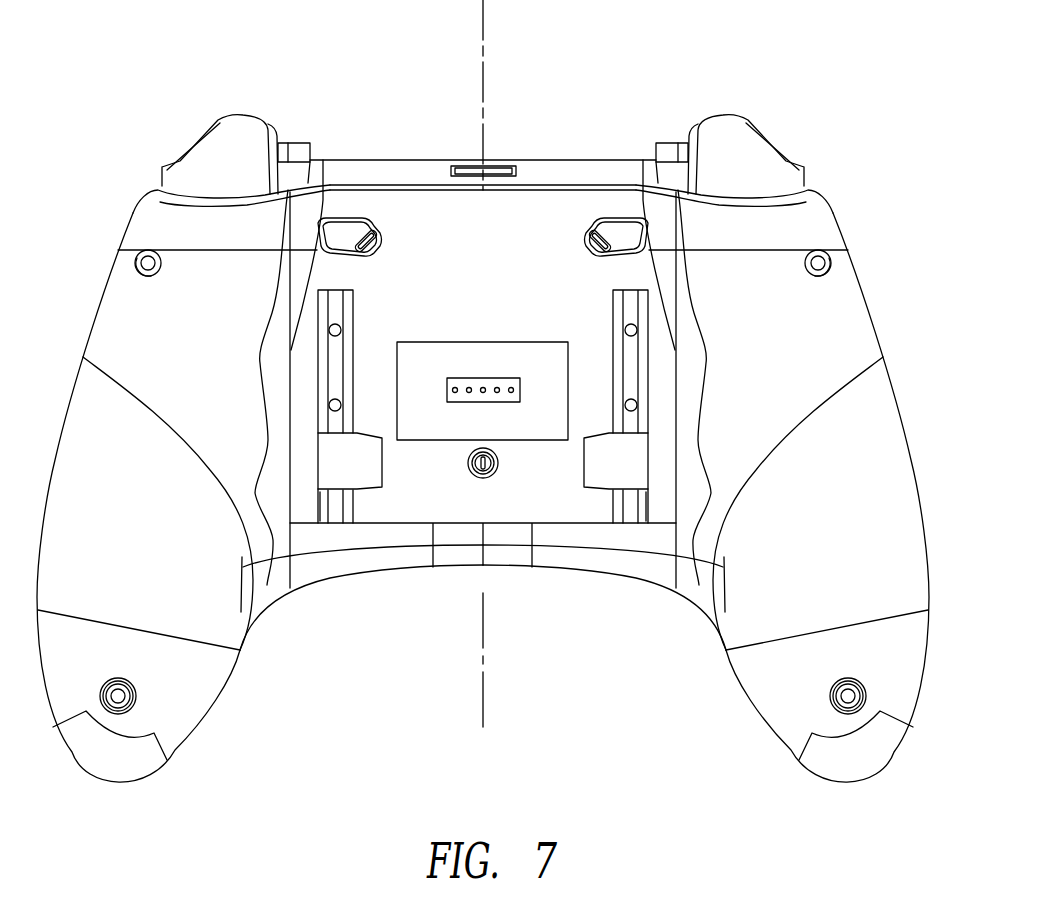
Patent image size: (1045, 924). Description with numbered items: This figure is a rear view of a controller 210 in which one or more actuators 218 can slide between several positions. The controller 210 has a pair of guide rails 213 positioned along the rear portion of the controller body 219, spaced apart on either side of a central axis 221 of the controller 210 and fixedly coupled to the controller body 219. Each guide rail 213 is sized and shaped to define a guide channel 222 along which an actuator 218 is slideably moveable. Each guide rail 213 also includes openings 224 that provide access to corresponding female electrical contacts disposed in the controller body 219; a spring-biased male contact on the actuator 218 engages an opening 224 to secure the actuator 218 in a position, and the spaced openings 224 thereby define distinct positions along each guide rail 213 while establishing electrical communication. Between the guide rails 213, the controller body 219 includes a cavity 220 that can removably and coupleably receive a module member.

The controller 210 is at (487, 410).
The guide rail 213 is at (623, 292).
The actuator 218 is at (599, 456).
The controller body 219 is at (437, 202).
The cavity 220 is at (553, 374).
The central axis 221 is at (483, 22).
The guide channel 222 is at (336, 518).
The opening 224 is at (603, 331).